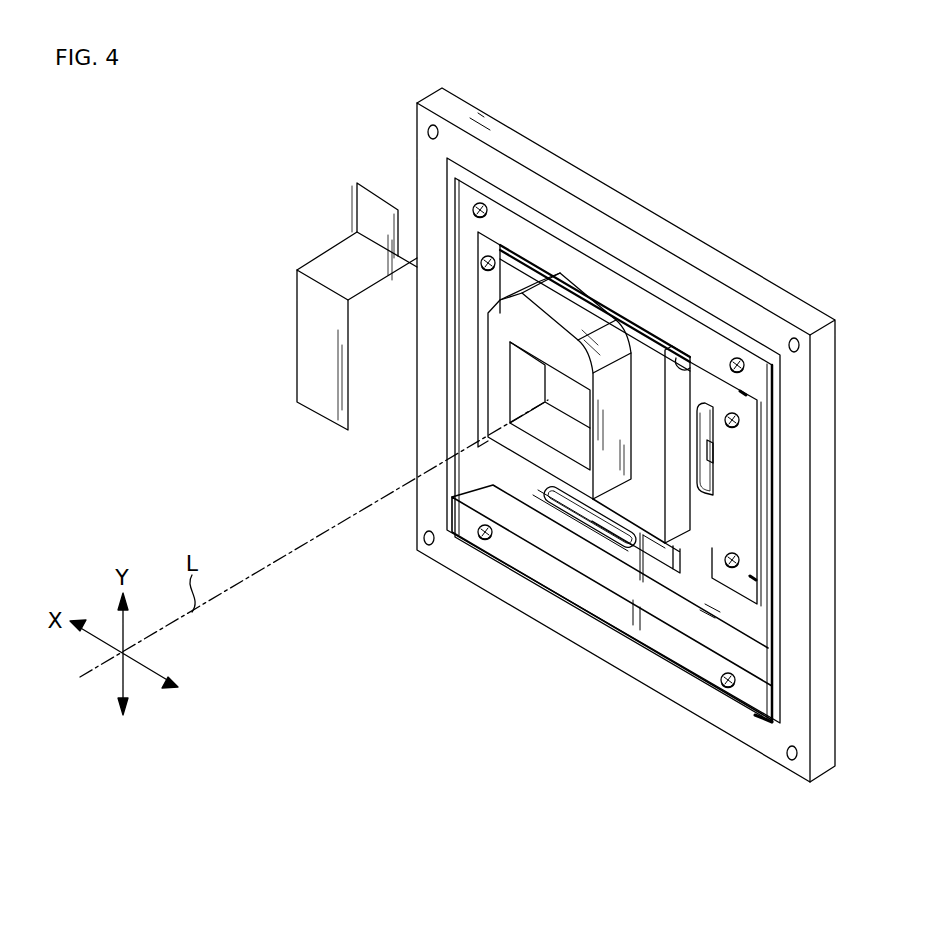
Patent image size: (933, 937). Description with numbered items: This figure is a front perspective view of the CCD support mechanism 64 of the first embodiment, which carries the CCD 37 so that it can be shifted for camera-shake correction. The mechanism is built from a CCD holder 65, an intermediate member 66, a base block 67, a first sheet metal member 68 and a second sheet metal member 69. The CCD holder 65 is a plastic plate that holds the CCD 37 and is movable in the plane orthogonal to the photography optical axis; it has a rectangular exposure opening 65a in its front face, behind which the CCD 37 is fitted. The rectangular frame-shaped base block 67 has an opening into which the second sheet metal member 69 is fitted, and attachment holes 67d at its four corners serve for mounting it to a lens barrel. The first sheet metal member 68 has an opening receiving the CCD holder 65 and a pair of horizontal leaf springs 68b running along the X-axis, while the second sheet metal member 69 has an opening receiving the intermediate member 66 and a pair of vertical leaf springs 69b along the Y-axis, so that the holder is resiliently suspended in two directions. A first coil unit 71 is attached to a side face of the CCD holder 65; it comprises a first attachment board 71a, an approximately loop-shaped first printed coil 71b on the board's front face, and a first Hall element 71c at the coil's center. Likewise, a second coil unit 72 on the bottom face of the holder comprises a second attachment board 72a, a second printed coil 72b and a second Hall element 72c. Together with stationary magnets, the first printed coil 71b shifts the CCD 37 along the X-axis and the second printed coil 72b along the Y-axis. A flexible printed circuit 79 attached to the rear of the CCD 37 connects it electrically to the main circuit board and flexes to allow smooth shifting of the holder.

The CCD support mechanism 64 is at (542, 112).
The CCD holder 65 is at (548, 302).
The exposure opening 65a is at (525, 369).
The intermediate member 66 is at (737, 335).
The base block 67 is at (828, 356).
The mounting hole 67d is at (790, 732).
The first sheet metal member 68 is at (753, 578).
The horizontal leaf springs 68b is at (735, 340).
The second sheet metal member 69 is at (640, 292).
The vertical leaf springs 69b is at (467, 247).
The first coil unit 71 is at (716, 480).
The first attachment board 71a is at (712, 500).
The first printed coil 71b is at (743, 393).
The first Hall element 71c is at (715, 452).
The second coil unit 72 is at (558, 528).
The second attachment board 72a is at (533, 495).
The second printed coil 72b is at (640, 522).
The second Hall element 72c is at (597, 512).
The CCD 37 is at (560, 388).
The flexible printed circuit 79 is at (300, 325).